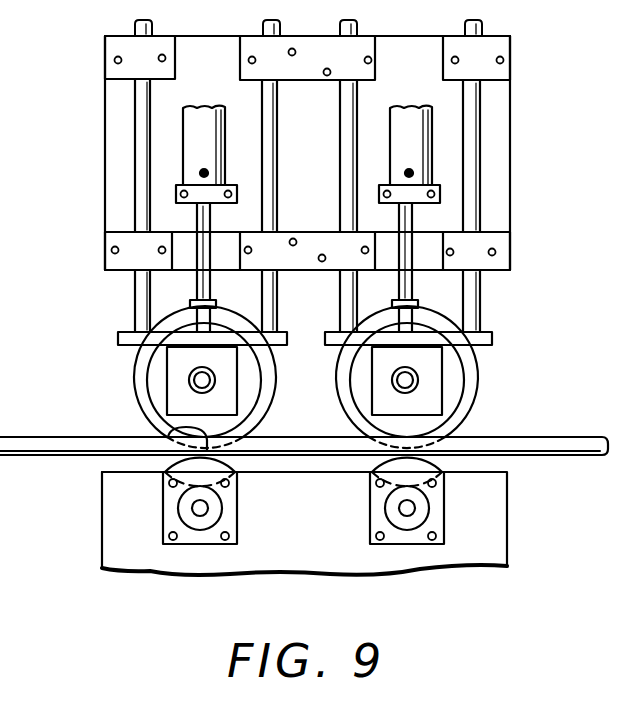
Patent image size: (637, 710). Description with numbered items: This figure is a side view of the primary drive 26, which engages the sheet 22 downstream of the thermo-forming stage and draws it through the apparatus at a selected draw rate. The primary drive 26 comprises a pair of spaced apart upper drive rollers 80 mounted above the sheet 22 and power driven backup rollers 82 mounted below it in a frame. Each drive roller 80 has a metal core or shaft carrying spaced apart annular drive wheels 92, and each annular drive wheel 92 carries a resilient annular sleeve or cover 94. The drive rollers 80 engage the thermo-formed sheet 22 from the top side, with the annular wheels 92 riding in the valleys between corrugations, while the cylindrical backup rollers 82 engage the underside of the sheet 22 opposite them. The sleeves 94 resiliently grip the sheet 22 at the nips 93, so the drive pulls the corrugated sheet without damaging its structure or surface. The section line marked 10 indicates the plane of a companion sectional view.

The section line 10- 10 is at (57, 262).
The sheet 22 is at (582, 438).
The primary drive 26 is at (566, 83).
The upper drive roller 80 is at (478, 366).
The backup roller 82 is at (470, 508).
The annular drive wheel 92 is at (452, 385).
The nip 93 is at (198, 432).
The resilient annular sleeve 94 is at (460, 417).